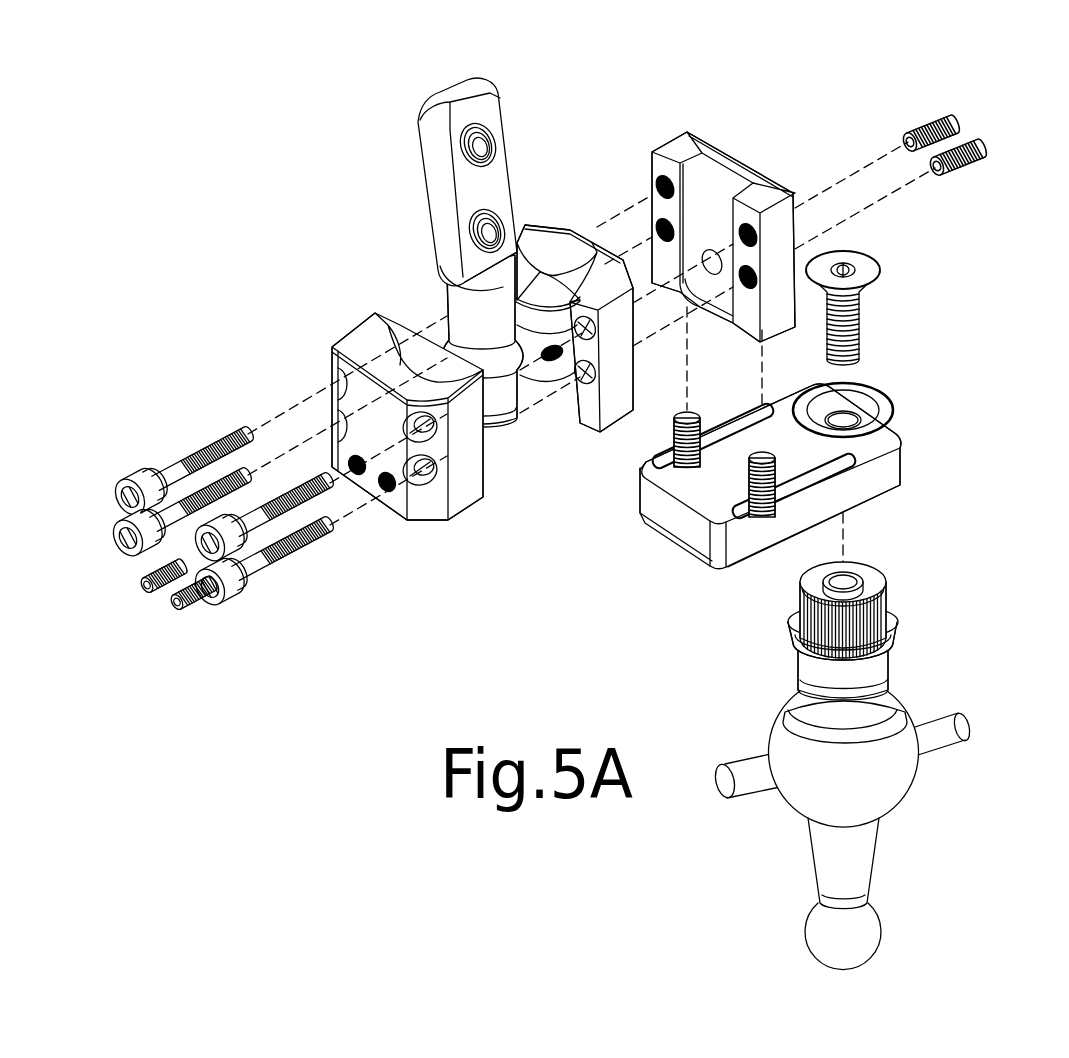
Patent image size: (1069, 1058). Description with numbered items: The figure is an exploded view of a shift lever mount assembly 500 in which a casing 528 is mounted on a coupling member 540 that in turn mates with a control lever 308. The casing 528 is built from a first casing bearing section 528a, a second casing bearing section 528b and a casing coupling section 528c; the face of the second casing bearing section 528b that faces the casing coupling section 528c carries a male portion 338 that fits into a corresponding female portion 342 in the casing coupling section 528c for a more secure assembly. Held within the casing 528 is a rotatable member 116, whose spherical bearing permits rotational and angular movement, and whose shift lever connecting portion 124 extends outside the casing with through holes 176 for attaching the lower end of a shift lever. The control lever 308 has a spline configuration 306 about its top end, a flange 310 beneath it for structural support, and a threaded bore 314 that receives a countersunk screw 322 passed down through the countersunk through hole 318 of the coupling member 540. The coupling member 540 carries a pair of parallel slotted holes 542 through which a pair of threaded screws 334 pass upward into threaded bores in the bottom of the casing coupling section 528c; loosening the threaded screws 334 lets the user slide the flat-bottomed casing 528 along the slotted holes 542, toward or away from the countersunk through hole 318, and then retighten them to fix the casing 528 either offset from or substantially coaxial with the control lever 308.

The rod clamp assembly 500 is at (579, 503).
The rotatable member 116 is at (412, 231).
The shift lever connecting portion 124 is at (437, 231).
The through holes 176 is at (470, 232).
The male portion 338 is at (597, 230).
The second casing bearing section 528b is at (578, 247).
The casing coupling section 528c is at (767, 205).
The female portion 342 is at (725, 192).
The countersunk screw 322 is at (867, 270).
The countersunk through hole 318 is at (779, 438).
The coupling member 540 is at (853, 405).
The first casing bearing section 528a is at (372, 334).
The threaded screws 334 is at (665, 425).
The slotted holes 542 is at (652, 470).
The casing 528 is at (521, 349).
The threaded bore 314 is at (851, 574).
The spline configuration 306 is at (921, 591).
The control lever 308 is at (857, 673).
The flange 310 is at (790, 623).